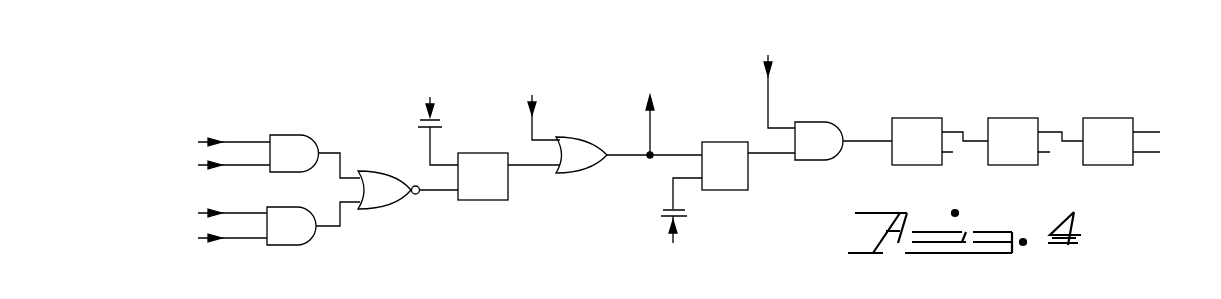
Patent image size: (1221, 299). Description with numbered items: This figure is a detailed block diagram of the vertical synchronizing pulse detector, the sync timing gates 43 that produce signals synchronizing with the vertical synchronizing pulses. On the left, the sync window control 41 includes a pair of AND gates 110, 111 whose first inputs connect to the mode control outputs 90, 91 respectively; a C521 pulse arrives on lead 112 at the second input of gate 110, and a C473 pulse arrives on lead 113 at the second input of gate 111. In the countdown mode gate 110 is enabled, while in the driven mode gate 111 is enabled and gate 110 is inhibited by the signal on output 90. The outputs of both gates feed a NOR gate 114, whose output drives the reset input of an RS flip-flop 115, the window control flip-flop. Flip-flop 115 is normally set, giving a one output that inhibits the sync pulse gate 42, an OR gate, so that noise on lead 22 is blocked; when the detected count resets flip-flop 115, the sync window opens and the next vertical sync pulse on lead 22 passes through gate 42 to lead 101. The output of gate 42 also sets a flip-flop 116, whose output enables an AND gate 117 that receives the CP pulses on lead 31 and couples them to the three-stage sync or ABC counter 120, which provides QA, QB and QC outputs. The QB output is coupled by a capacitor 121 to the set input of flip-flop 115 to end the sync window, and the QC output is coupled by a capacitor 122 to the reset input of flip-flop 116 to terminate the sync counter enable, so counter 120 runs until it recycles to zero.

The lead 112 is at (216, 140).
The AND gate 110 is at (290, 134).
The mode control output 90 is at (216, 168).
The mode control output 91 is at (216, 211).
The AND gate 111 is at (300, 246).
The lead 113 is at (216, 241).
The NOR gate 114 is at (380, 209).
The RS flip-flop 115 is at (490, 200).
The capacitor 121 is at (442, 121).
The sync window control 41 is at (392, 120).
The lead 22 is at (537, 108).
The sync pulse gate 42 is at (580, 173).
The lead 101 is at (654, 110).
The capacitor 122 is at (660, 212).
The flip-flop 116 is at (745, 190).
The lead 31 is at (773, 69).
The AND gate 117 is at (812, 121).
The sync timing gates 43 is at (866, 82).
The sync or ABC counter 120 is at (1062, 84).